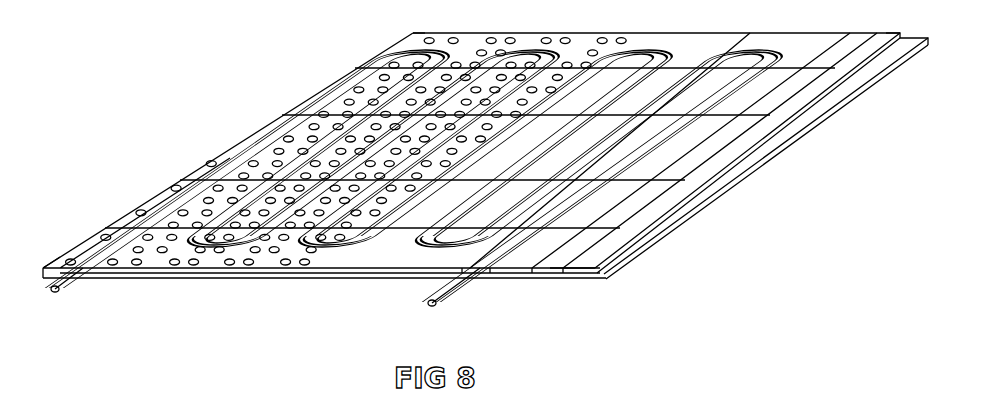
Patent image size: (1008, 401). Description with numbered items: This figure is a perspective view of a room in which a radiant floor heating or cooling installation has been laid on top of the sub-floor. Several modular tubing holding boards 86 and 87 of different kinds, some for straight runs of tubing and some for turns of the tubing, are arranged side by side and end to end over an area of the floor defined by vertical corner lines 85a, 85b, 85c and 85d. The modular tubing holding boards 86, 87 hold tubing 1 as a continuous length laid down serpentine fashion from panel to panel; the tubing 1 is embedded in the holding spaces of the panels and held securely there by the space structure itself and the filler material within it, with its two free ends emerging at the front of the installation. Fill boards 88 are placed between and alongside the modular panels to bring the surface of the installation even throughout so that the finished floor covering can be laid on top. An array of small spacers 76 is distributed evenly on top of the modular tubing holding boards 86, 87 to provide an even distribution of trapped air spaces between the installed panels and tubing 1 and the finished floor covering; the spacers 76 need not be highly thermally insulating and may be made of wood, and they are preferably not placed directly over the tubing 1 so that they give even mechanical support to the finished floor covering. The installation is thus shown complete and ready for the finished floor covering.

The tubing 1 is at (56, 292).
The spacers 76 is at (180, 199).
The vertical corner line 85a is at (58, 262).
The vertical corner line 85b is at (416, 0).
The vertical corner line 85c is at (898, 25).
The vertical corner line 85d is at (560, 258).
The modular tubing holding boards 86 is at (148, 215).
The modular tubing holding boards 87 is at (481, 38).
The fill boards 88 is at (857, 58).